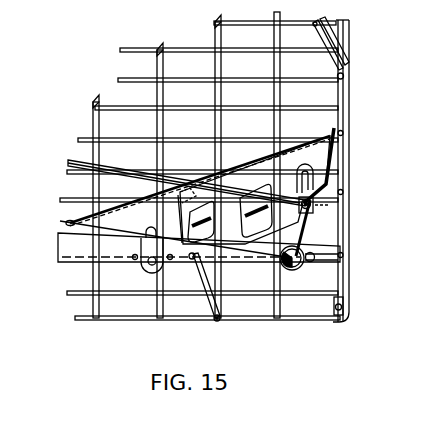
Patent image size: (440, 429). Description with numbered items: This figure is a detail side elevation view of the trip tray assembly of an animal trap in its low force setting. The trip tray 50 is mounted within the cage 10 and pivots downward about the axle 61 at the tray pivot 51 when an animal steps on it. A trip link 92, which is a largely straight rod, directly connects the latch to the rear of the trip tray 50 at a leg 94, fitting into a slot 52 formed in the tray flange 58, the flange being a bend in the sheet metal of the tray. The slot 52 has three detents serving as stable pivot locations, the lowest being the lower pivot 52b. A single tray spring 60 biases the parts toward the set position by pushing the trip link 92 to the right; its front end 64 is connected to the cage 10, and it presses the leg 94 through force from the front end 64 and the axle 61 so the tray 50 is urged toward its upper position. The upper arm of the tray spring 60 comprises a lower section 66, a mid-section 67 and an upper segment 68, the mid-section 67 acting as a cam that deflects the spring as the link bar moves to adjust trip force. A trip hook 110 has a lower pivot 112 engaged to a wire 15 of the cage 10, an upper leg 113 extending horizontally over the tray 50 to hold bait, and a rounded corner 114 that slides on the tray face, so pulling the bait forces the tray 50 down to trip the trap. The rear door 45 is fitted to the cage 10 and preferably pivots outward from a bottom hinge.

The cage 10 is at (283, 35).
The wire 15 is at (215, 320).
The rear door 45 is at (342, 97).
The trip tray 50 is at (271, 168).
The tray pivot 51 is at (300, 259).
The slot 52 is at (298, 184).
The lower pivot 52b is at (309, 209).
The tray flange 58 is at (320, 152).
The tray spring 60 is at (318, 258).
The axle 61 is at (336, 268).
The front end 64 is at (68, 222).
The lower section 66 is at (302, 235).
The mid-section 67 is at (309, 201).
The upper segment 68 is at (336, 171).
The trip link 92 is at (152, 170).
The leg 94 is at (349, 215).
The trip hook 110 is at (205, 290).
The lower pivot 112 is at (219, 320).
The upper leg 113 is at (188, 192).
The corner 114 is at (188, 258).